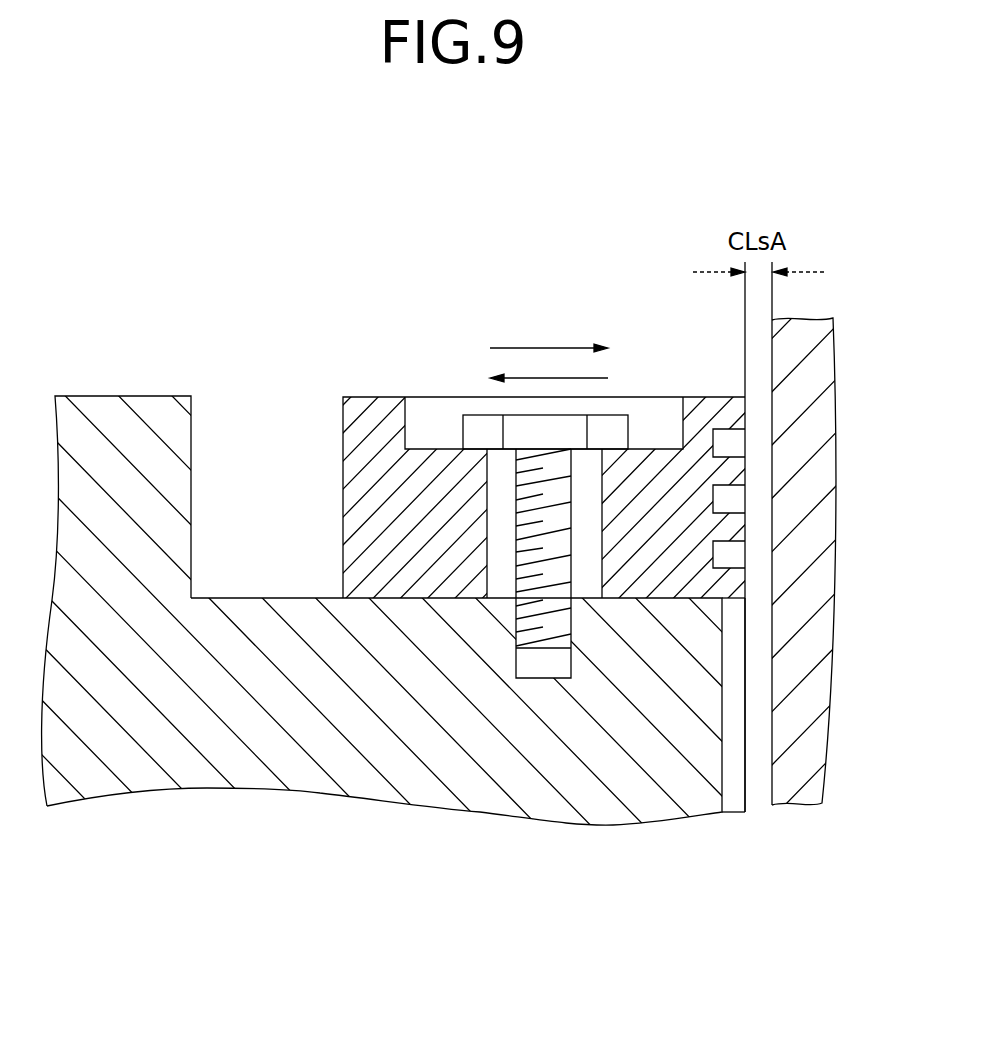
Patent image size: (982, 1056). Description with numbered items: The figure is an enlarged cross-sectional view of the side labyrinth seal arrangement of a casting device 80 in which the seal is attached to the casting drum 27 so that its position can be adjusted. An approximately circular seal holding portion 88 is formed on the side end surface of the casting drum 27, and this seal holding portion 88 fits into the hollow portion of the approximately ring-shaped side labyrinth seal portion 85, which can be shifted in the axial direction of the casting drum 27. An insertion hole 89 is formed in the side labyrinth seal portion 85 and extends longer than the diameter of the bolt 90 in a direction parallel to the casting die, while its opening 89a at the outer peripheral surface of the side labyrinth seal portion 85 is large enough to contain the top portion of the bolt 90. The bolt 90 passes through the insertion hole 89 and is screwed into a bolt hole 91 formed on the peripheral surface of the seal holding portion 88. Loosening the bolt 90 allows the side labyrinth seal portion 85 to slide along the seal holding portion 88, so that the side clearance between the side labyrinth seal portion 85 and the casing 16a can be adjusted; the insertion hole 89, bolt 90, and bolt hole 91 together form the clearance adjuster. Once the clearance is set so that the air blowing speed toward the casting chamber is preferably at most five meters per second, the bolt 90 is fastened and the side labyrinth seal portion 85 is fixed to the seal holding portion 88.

The casing 16a is at (797, 806).
The casting drum 27 is at (100, 396).
The casting device 80 is at (315, 945).
The side labyrinth seal portion 85 is at (366, 388).
The seal holding portion 88 is at (230, 597).
The insertion hole 89 is at (498, 521).
The opening 89a is at (648, 447).
The bolt 90 is at (485, 428).
The bolt hole 91 is at (537, 665).